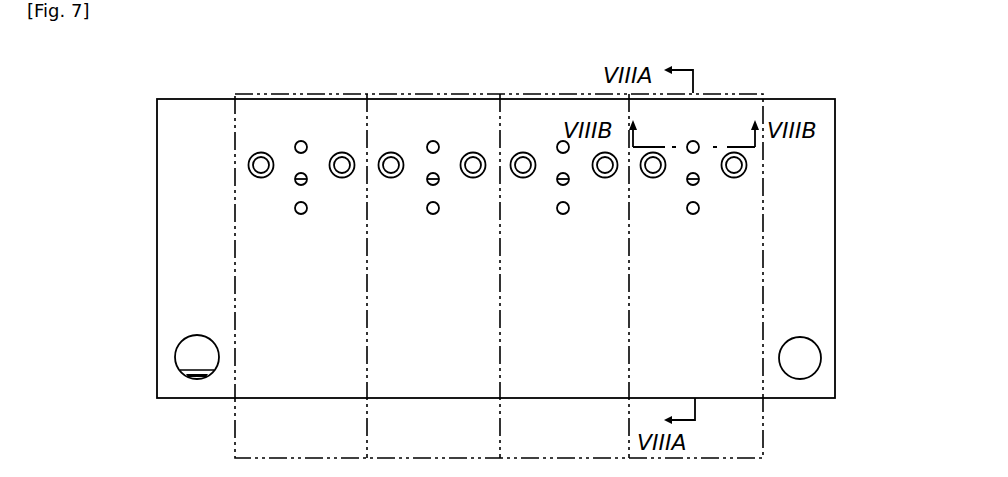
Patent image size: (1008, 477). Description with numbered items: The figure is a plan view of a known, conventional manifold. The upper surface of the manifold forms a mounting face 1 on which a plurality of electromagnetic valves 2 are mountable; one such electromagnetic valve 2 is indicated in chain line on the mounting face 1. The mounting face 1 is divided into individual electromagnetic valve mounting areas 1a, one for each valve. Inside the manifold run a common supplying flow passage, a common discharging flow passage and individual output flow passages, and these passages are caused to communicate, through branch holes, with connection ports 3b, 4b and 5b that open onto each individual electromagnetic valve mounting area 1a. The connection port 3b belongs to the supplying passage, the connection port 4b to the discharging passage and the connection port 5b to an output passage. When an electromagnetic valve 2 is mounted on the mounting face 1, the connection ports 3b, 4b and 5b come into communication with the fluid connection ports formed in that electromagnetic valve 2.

The mounting face 1 is at (813, 177).
The individual electromagnetic valve mounting area 1a is at (520, 112).
The electromagnetic valve 2 is at (380, 95).
The connection port 3b is at (430, 214).
The connection port 4b is at (436, 182).
The connection port 5b is at (433, 141).